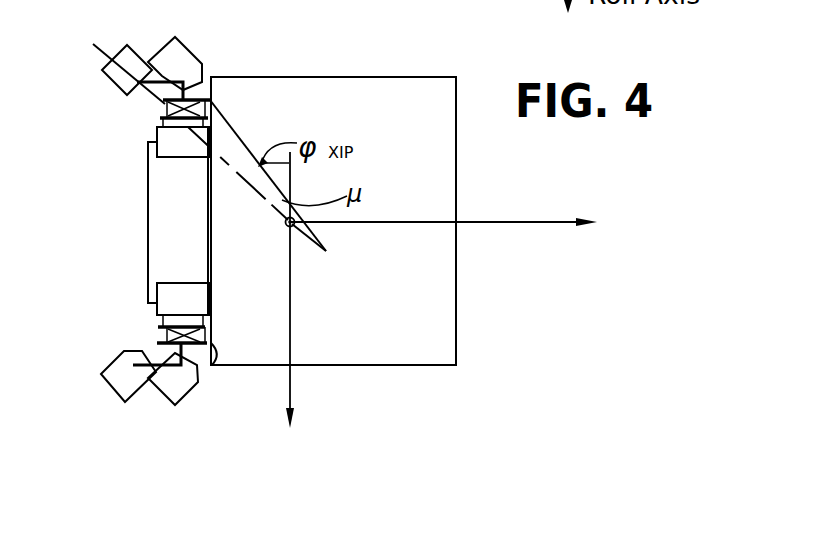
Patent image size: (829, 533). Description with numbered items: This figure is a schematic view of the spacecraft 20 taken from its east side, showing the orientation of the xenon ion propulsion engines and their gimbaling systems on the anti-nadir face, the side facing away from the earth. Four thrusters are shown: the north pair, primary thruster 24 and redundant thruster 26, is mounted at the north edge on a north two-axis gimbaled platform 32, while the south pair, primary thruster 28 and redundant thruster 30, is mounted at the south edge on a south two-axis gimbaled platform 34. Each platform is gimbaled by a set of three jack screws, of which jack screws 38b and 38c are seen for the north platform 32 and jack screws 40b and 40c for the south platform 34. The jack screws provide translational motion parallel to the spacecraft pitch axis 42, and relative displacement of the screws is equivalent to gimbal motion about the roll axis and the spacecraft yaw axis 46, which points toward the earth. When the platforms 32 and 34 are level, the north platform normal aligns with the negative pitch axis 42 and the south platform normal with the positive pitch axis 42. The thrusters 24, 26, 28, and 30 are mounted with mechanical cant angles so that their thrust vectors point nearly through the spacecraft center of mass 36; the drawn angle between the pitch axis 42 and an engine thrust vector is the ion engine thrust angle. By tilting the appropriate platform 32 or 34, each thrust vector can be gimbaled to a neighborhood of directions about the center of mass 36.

The spacecraft 20 is at (350, 78).
The xenon ion propulsion engine 24 is at (182, 57).
The xenon ion propulsion engine 26 is at (100, 77).
The xenon ion propulsion engine 28 is at (172, 392).
The xenon ion propulsion engine 30 is at (113, 382).
The north two-axis gimbaled platform 32 is at (163, 100).
The south two-axis gimbaled platform 34 is at (158, 343).
The spacecraft center of mass 36 is at (290, 222).
The jack screw 38b is at (177, 100).
The jack screw 38c is at (212, 100).
The jack screw 40b is at (158, 332).
The jack screw 40c is at (213, 360).
The spacecraft pitch axis 42 is at (291, 400).
The spacecraft yaw axis 46 is at (478, 220).